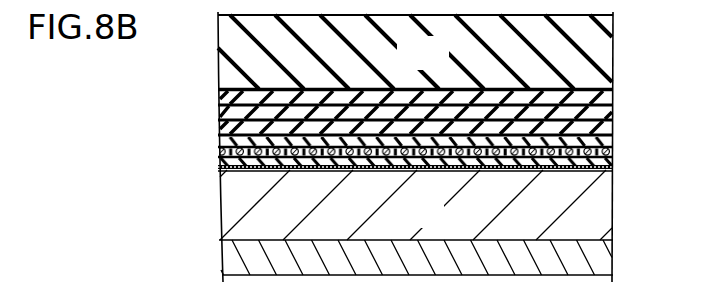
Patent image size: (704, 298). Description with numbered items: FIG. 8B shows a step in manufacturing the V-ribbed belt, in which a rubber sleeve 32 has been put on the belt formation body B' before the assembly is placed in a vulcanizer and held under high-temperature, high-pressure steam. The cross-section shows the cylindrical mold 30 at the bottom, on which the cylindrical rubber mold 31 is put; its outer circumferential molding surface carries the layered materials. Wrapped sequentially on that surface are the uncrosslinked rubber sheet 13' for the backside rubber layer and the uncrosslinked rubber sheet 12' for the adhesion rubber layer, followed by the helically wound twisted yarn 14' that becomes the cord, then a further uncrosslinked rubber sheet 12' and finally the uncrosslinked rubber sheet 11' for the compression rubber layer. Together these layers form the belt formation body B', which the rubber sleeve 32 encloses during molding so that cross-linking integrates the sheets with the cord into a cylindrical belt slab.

The rubber sleeve 32 is at (437, 66).
The cylindrical rubber mold 31 is at (438, 226).
The cylindrical mold 30 is at (598, 260).
The uncrosslinked rubber sheet for the compression rubber layer 11' is at (386, 113).
The uncrosslinked rubber sheet for the adhesion rubber layer 12' is at (386, 150).
The uncrosslinked rubber sheet for the backside rubber layer 13' is at (448, 182).
The twisted yarn 14' is at (449, 150).
The belt formation body B' is at (440, 147).